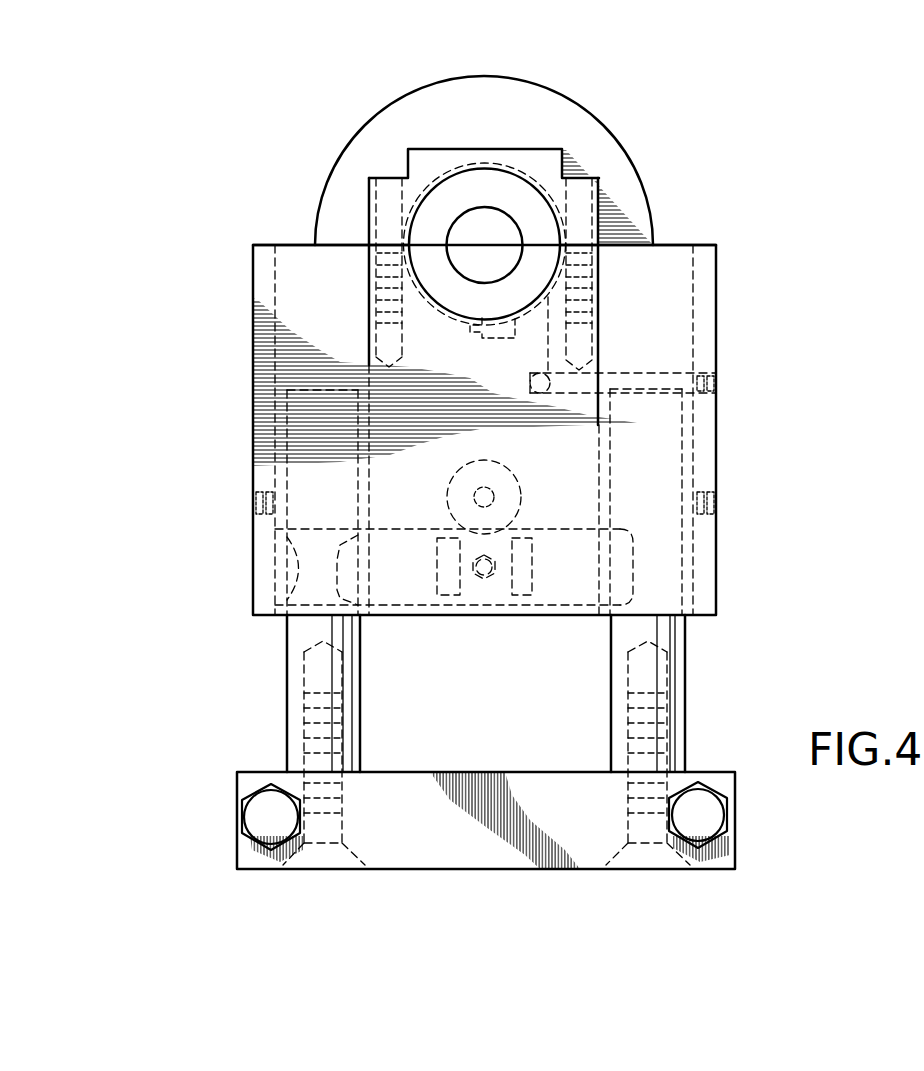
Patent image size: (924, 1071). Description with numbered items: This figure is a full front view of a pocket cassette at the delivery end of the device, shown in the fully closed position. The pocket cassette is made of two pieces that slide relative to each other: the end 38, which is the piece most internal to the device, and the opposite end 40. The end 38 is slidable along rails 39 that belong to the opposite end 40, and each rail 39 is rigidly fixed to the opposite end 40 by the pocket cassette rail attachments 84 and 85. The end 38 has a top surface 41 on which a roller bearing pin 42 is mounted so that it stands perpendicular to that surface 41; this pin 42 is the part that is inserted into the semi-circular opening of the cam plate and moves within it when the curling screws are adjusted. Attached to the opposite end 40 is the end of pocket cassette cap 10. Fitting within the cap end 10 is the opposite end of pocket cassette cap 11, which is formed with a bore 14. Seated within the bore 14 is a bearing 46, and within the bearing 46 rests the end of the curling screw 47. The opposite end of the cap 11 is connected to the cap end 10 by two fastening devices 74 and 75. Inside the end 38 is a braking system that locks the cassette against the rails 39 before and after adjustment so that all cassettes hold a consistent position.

The end of pocket cassette cap 10 is at (420, 160).
The opposite end of pocket cassette cap 11 is at (418, 321).
The bore 14 is at (457, 245).
The end of the pocket cassette 38 is at (305, 298).
The rails 39 is at (302, 633).
The opposite end of the pocket cassette 40 is at (250, 784).
The top surface 41 is at (385, 471).
The roller bearing pin 42 is at (515, 474).
The bearing 46 is at (513, 188).
The curling screw 47 is at (513, 318).
The fastening device 74 is at (390, 195).
The fastening device 75 is at (583, 211).
The pocket cassette rail attachment 84 is at (312, 680).
The pocket cassette rail attachment 85 is at (648, 695).